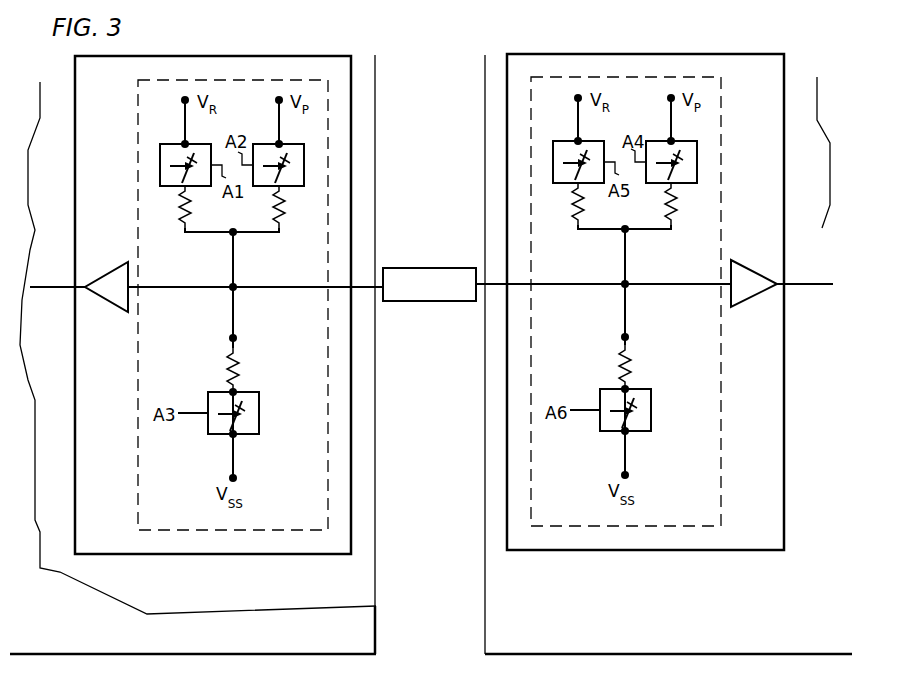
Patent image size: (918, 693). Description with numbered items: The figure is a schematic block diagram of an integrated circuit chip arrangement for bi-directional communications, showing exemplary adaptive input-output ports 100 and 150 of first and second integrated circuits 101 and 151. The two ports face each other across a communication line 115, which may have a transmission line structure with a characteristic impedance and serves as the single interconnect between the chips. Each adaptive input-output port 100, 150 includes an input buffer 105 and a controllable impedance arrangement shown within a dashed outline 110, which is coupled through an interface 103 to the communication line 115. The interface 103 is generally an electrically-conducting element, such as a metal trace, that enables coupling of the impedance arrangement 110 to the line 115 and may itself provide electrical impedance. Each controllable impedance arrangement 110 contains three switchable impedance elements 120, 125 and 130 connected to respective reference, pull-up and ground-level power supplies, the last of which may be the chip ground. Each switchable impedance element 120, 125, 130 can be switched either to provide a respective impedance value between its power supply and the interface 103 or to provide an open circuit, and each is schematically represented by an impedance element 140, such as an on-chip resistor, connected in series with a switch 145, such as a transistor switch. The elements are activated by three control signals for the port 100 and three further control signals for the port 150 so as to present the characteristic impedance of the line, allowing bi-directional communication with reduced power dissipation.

The adaptive input-output port 100 is at (200, 554).
The first integrated circuit 101 is at (378, 612).
The interface 103 is at (360, 287).
The input buffer 105 is at (120, 311).
The controllable impedance arrangement 110 is at (138, 497).
The communication line 115 is at (418, 268).
The switchable impedance element 120 is at (379, 163).
The switchable impedance element 125 is at (479, 163).
The switchable impedance element 130 is at (414, 353).
The impedance element 140 is at (283, 226).
The switch 145 is at (160, 152).
The adaptive input-output port 150 is at (633, 550).
The second integrated circuit 151 is at (487, 618).